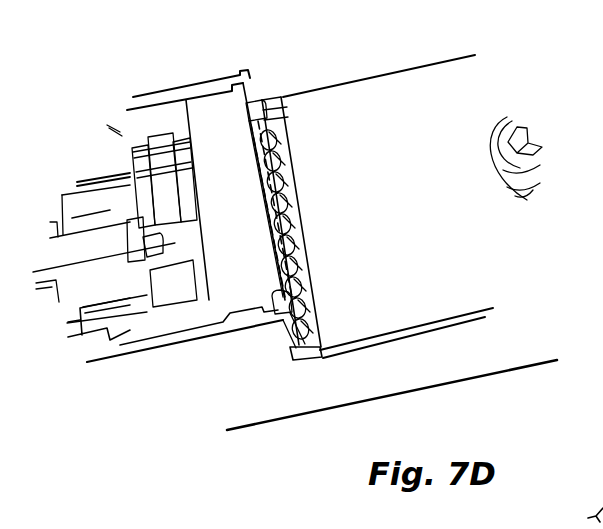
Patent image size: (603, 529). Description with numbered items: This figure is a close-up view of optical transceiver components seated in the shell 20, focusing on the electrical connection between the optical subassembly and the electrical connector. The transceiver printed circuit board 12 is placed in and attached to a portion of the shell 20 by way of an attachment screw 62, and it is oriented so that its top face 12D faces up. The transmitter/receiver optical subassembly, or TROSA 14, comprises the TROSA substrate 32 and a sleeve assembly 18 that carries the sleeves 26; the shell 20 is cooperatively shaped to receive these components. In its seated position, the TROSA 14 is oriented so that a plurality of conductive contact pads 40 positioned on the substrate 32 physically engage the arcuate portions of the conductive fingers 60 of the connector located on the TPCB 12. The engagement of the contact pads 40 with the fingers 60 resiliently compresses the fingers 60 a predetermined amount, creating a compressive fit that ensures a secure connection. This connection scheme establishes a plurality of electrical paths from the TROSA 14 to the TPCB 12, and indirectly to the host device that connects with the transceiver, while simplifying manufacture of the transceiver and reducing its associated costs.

The transceiver printed circuit board 12 is at (377, 87).
The top face 12D is at (397, 158).
The transmitter/receiver optical subassembly 14 is at (152, 114).
The sleeve assembly 18 is at (235, 100).
The shell 20 is at (425, 363).
The sleeves 26 is at (106, 176).
The TROSA substrate 32 is at (270, 133).
The conductive contact pads 40 is at (283, 133).
The conductive fingers 60 is at (307, 238).
The attachment screw 62 is at (512, 122).